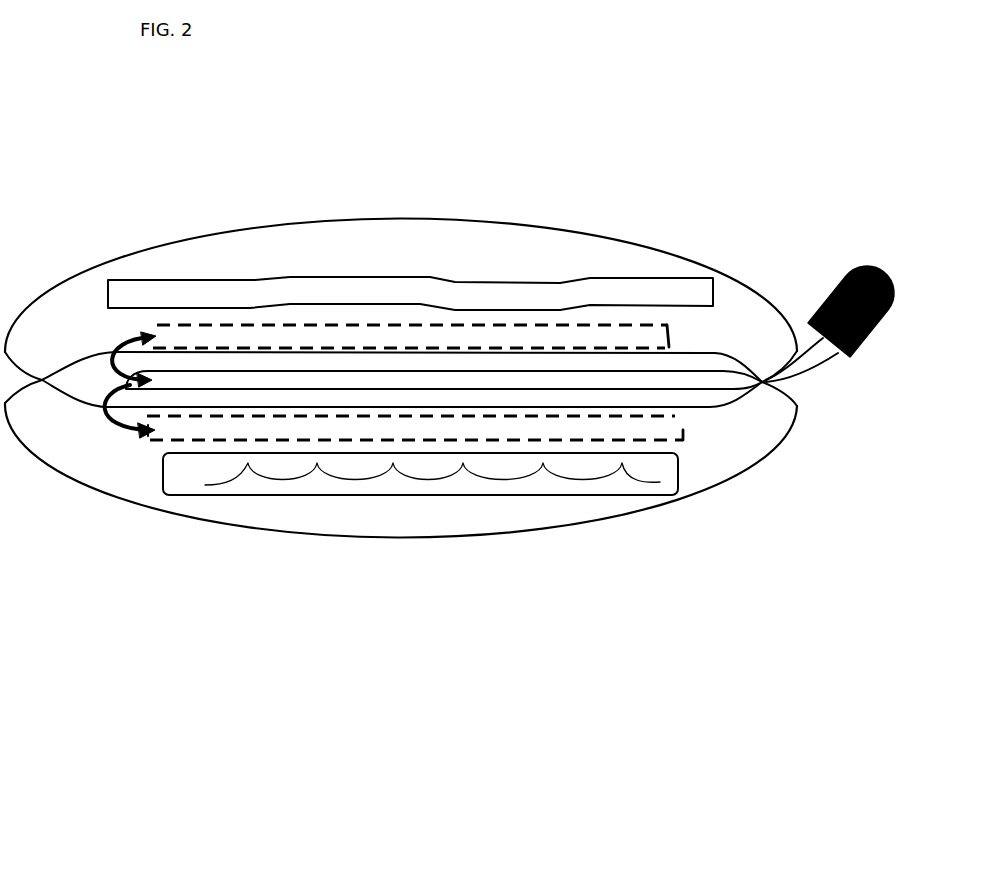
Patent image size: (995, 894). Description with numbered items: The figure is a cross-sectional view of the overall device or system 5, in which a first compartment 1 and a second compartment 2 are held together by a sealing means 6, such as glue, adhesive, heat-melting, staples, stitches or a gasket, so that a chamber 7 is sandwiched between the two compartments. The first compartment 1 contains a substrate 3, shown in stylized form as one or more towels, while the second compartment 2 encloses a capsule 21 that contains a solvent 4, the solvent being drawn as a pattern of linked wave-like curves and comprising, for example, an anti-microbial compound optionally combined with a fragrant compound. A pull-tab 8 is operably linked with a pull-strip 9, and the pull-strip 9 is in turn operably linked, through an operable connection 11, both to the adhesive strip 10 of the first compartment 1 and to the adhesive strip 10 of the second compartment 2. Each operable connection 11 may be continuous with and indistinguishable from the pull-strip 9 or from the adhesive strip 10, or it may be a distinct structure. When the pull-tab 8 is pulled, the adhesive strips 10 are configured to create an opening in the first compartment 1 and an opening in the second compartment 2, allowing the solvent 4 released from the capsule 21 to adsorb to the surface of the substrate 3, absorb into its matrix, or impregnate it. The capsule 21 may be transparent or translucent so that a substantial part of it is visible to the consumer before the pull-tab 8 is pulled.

The first compartment 1 is at (275, 245).
The second compartment 2 is at (325, 540).
The substrate 3 is at (612, 279).
The solvent 4 is at (520, 480).
The device 5 is at (542, 742).
The sealing means 6 is at (40, 387).
The chamber 7 is at (78, 378).
The pull-tab 8 is at (835, 282).
The pull-strip 9 is at (298, 382).
The adhesive strip 10 is at (207, 325).
The operable connection 11 is at (133, 333).
The capsule 21 is at (613, 497).